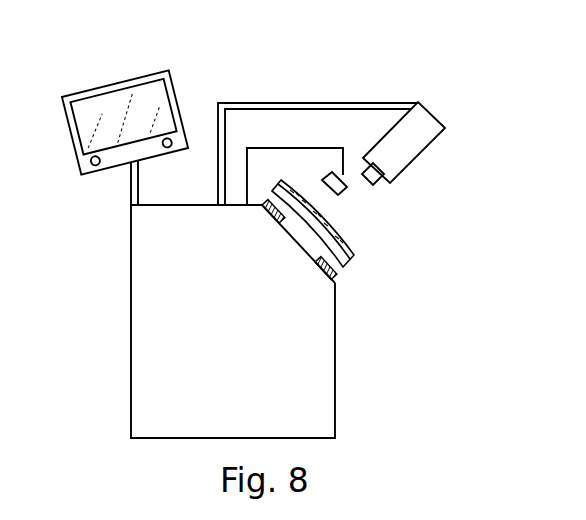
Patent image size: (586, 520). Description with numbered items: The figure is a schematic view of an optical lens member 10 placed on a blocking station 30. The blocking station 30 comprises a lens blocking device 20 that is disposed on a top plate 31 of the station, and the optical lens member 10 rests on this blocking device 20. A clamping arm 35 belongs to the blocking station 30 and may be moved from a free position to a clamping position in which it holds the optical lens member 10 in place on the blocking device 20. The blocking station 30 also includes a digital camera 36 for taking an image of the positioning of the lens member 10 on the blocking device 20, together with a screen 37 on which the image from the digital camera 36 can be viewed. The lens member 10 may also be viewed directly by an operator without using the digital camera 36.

The optical lens member 10 is at (343, 252).
The lens blocking device 20 is at (333, 275).
The blocking station 30 is at (265, 78).
The top plate 31 is at (343, 278).
The clamping arm 35 is at (323, 148).
The digital camera 36 is at (423, 140).
The screen 37 is at (115, 110).